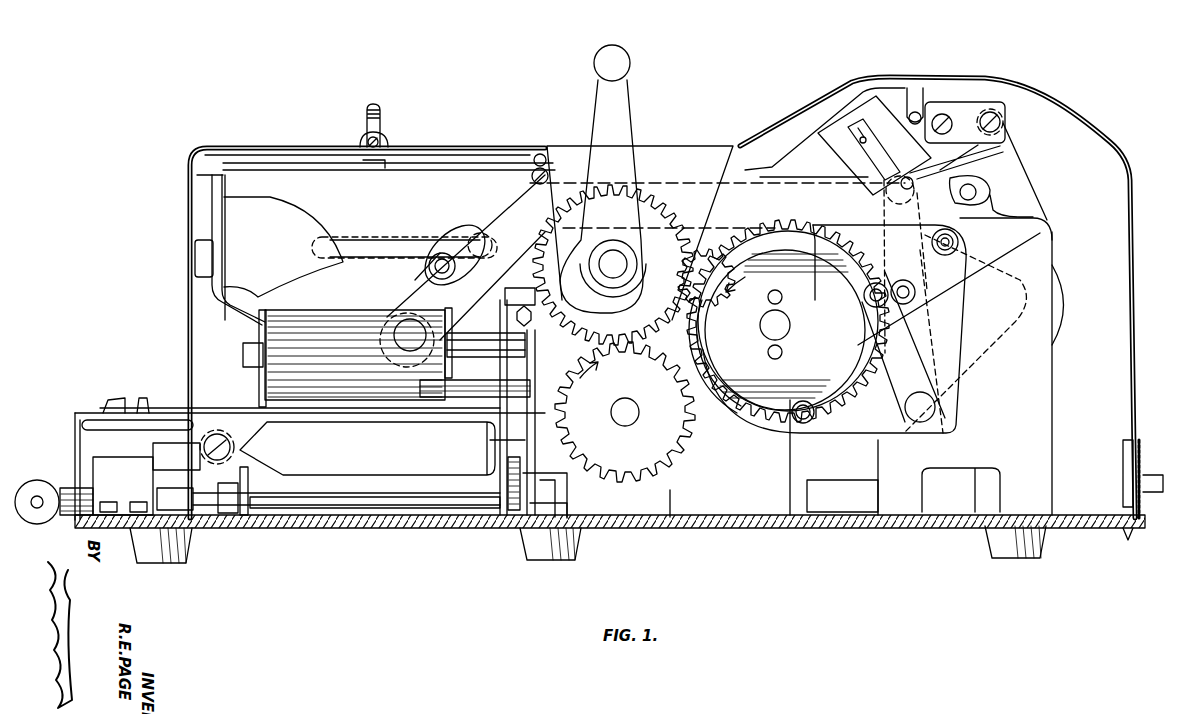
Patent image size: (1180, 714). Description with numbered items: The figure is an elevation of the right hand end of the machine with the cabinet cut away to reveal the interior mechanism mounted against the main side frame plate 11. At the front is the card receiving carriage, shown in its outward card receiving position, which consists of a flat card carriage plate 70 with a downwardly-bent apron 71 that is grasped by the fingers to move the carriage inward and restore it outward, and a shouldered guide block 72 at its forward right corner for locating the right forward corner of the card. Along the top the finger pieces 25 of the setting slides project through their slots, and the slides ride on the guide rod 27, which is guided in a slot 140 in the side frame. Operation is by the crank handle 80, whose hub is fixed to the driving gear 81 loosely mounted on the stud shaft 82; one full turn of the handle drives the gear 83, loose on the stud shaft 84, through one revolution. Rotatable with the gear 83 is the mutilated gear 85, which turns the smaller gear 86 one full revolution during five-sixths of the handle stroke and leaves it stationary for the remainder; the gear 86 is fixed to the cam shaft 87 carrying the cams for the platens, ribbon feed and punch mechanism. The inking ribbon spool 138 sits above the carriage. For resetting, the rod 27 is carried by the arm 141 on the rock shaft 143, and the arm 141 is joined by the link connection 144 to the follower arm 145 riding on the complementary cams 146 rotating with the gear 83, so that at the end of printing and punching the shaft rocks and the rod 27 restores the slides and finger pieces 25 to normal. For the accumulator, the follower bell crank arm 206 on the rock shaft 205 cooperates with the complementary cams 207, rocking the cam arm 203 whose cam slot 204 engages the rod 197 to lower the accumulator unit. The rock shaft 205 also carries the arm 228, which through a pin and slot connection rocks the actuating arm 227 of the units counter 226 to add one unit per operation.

The main side frame plate 11 is at (289, 240).
The manipulative member or finger piece 25 is at (378, 118).
The guide rod 27 is at (502, 207).
The card carriage plate 70 is at (357, 417).
The apron 71 is at (75, 425).
The guide block 72 is at (118, 400).
The crank handle 80 is at (623, 108).
The driving gear 81 is at (677, 260).
The stud shaft 82 is at (617, 260).
The gear 83 is at (688, 262).
The stud shaft 84 is at (782, 323).
The mutilated gear 85 is at (775, 403).
The smaller gear 86 is at (677, 470).
The cam shaft 87 is at (624, 418).
The ribbon spool 138 is at (313, 317).
The slot 140 is at (388, 240).
The arm 141 is at (403, 279).
The rock shaft 143 is at (385, 343).
The link connection 144 is at (530, 183).
The follower arm 145 is at (953, 282).
The complementary cams 146 is at (881, 270).
The rod 197 is at (978, 171).
The cam arm 203 is at (1065, 305).
The cam slot 204 is at (945, 178).
The rock shaft 205 is at (925, 410).
The follower bell crank arm 206 is at (955, 313).
The complementary cams 207 is at (747, 372).
The units counter 226 is at (880, 100).
The actuating arm 227 is at (877, 150).
The arm 228 is at (883, 237).